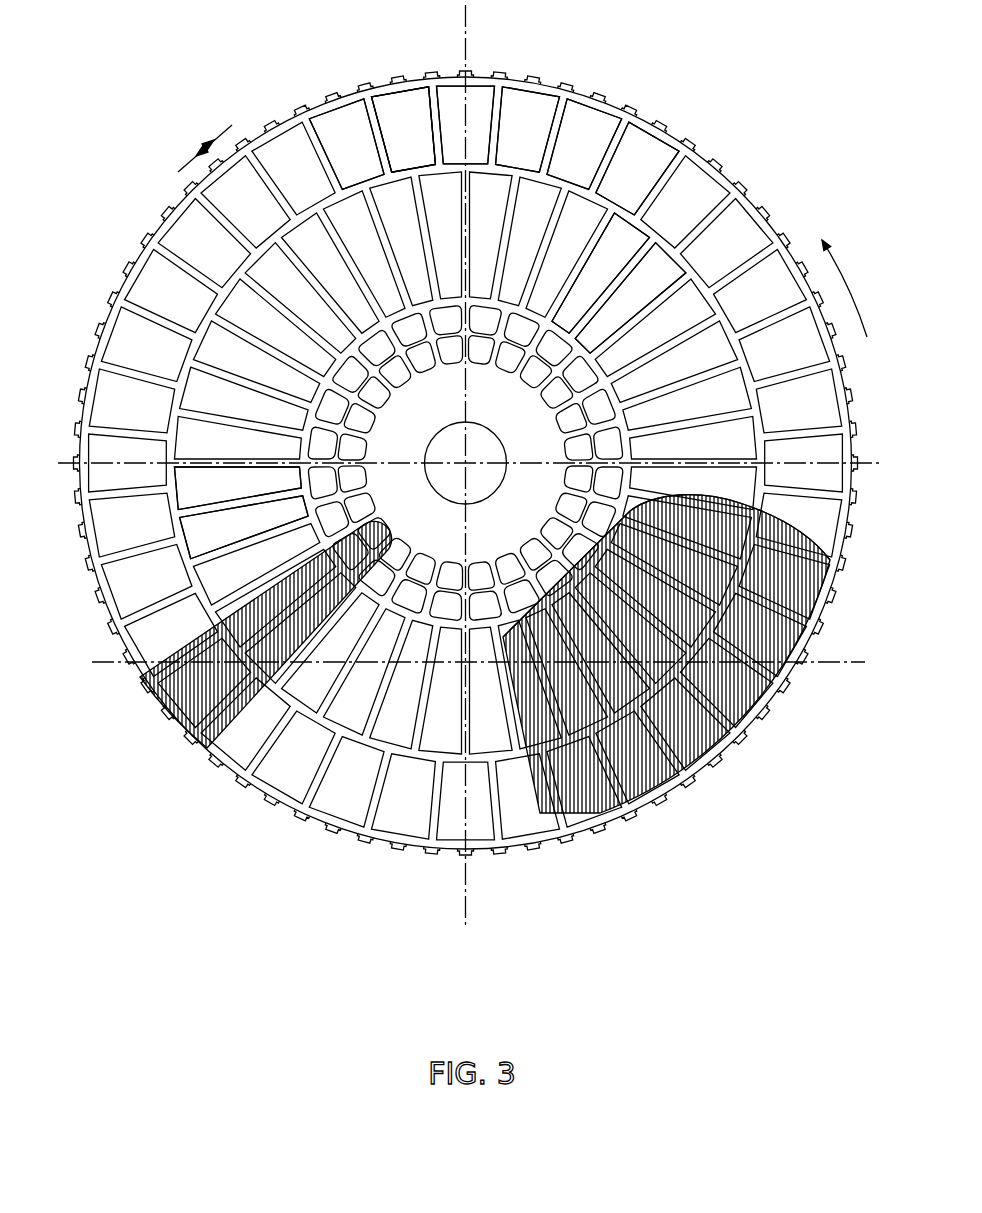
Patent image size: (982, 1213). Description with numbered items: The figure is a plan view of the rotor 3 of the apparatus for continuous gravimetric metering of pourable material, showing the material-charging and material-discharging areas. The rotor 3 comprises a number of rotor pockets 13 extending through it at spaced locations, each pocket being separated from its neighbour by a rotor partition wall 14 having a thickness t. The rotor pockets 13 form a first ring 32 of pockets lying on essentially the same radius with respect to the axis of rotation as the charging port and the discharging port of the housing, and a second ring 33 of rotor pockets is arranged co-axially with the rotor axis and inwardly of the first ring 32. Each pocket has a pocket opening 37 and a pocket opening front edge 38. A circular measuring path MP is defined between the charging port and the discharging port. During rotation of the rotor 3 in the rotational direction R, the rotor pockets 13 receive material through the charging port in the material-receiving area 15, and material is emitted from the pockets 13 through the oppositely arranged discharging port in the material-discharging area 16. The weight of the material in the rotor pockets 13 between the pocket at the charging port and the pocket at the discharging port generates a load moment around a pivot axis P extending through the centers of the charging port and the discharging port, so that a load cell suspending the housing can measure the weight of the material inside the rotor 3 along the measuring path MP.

The rotor 3 is at (757, 195).
The rotor pockets 13 is at (632, 137).
The rotor partition wall 14 is at (828, 553).
The material-receiving area 15 is at (753, 720).
The material-discharging area 16 is at (150, 700).
The first ring of pockets 32 is at (505, 95).
The second ring of rotor pockets 33 is at (643, 257).
The pocket opening 37 is at (410, 110).
The pocket opening front edge 38 is at (378, 140).
The measuring path MP is at (168, 412).
The pivot axis P is at (469, 662).
The rotational direction R is at (845, 288).
The thickness t is at (205, 140).